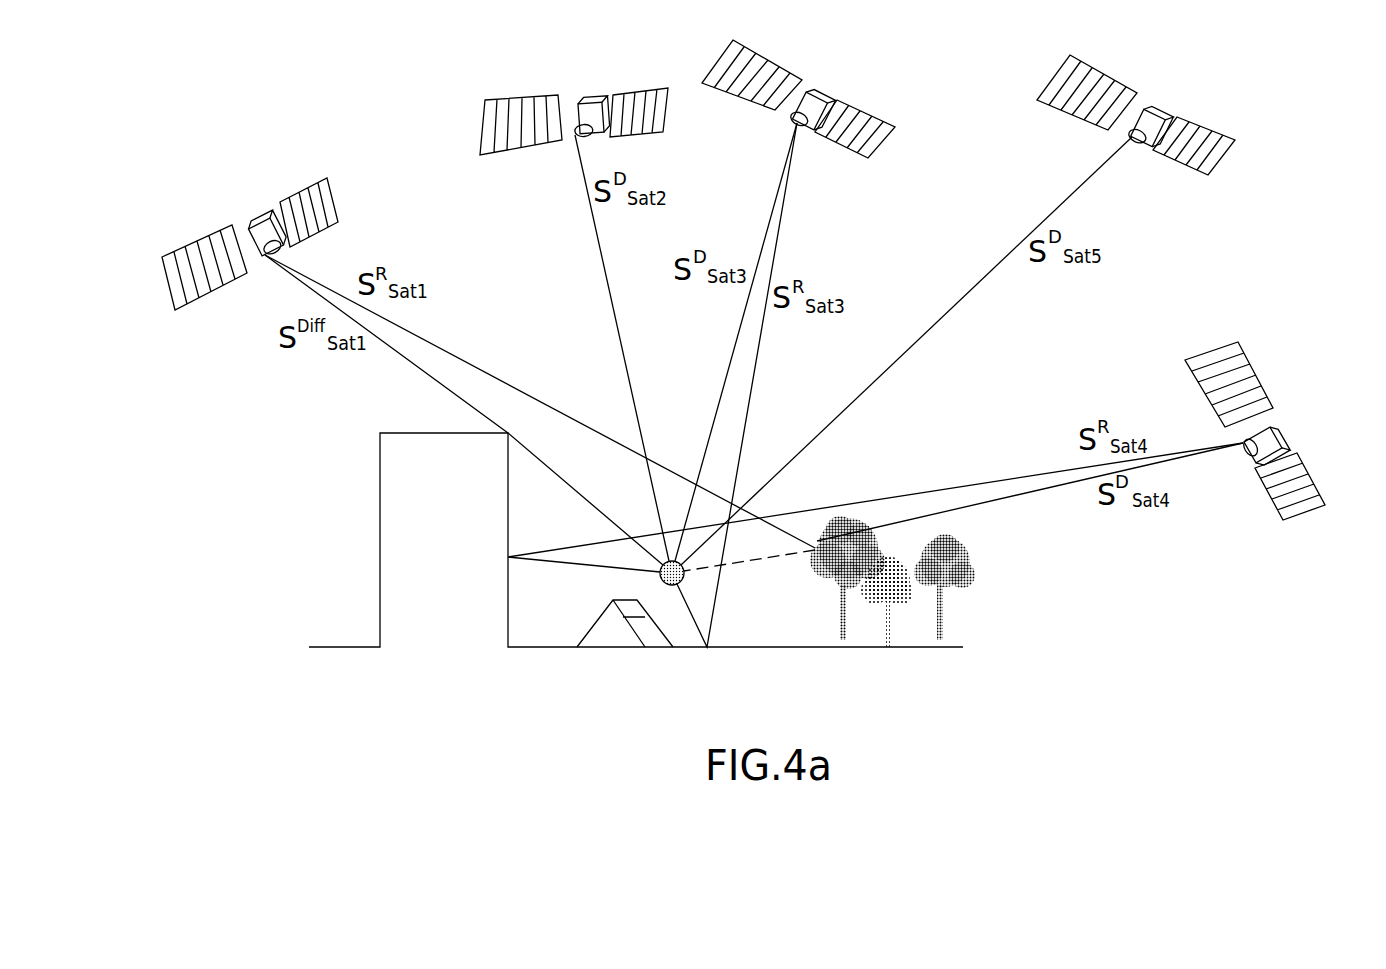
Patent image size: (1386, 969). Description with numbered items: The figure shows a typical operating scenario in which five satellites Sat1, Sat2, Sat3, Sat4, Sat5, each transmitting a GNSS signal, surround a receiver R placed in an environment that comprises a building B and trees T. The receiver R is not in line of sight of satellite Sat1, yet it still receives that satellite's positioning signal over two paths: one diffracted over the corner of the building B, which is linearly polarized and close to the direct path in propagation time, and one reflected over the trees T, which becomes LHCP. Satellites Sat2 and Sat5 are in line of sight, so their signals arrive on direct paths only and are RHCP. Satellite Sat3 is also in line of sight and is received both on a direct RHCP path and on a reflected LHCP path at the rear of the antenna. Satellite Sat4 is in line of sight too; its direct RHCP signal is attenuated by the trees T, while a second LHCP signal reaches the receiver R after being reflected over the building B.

The satellite 1 Sat1 is at (250, 244).
The satellite 2 Sat2 is at (574, 108).
The satellite 3 Sat3 is at (798, 99).
The satellite 4 Sat4 is at (1264, 431).
The satellite 5 Sat5 is at (1136, 115).
The receiver R is at (660, 580).
The trees T is at (967, 585).
The building B is at (438, 607).